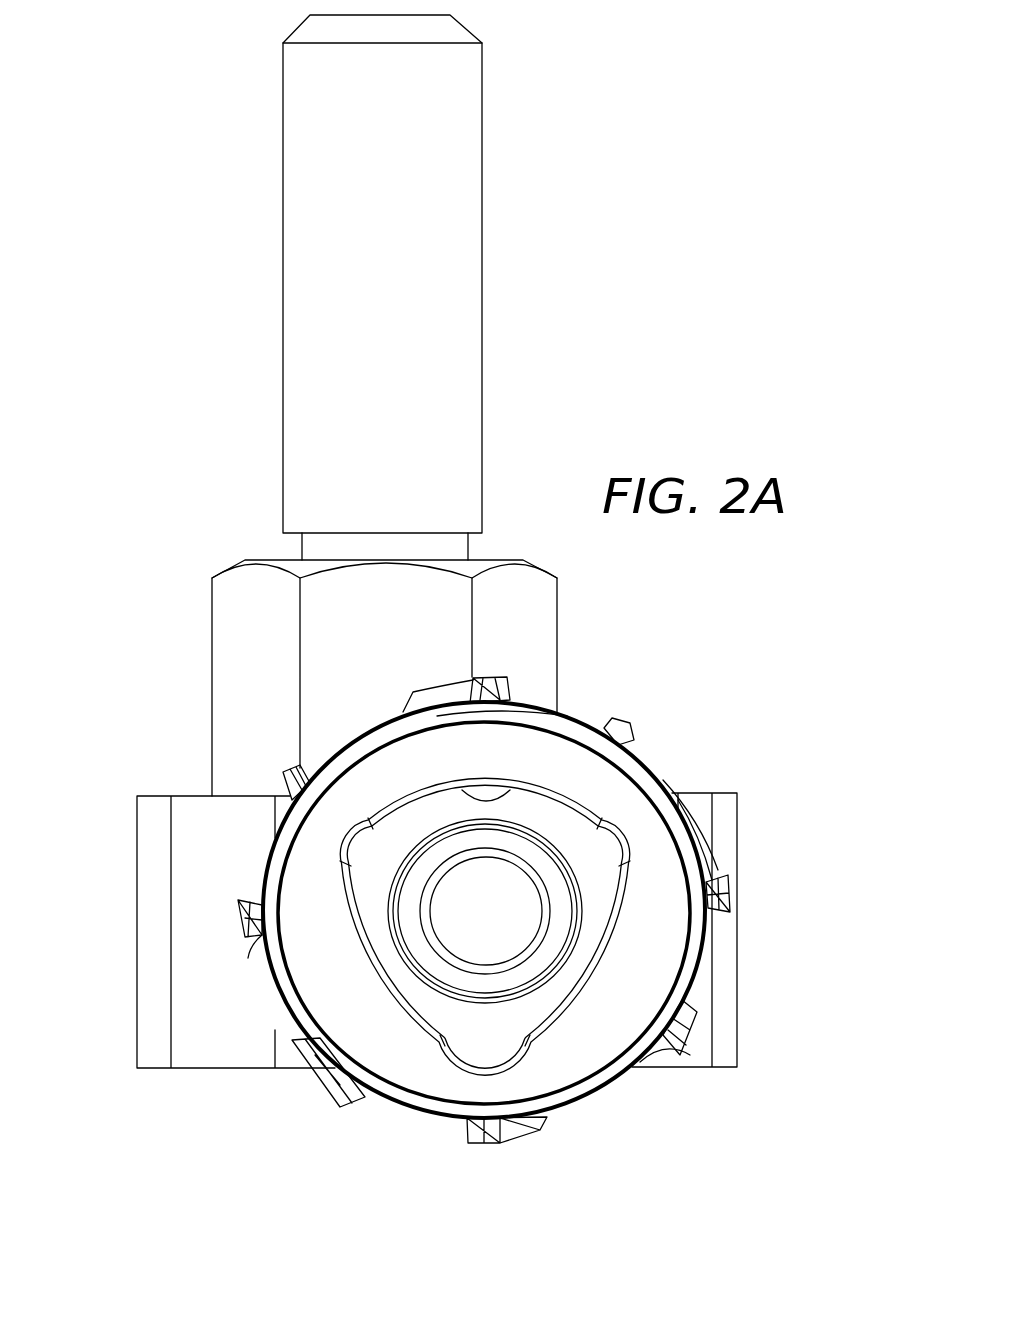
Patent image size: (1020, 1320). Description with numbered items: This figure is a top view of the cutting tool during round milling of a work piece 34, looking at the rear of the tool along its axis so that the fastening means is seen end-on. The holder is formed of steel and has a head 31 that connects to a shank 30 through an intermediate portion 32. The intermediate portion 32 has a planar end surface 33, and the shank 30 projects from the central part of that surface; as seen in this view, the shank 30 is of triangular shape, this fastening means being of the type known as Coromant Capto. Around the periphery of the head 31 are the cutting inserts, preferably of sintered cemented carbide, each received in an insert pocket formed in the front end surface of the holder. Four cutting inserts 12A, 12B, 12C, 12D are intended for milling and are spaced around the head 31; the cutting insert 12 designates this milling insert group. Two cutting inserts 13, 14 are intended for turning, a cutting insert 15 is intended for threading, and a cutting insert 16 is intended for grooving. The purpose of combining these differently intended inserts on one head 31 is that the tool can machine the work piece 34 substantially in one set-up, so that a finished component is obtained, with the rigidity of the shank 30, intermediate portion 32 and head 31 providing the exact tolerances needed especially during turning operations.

The cutting insert 12 is at (698, 738).
The cutting insert 12A is at (506, 684).
The cutting insert 12B is at (238, 905).
The cutting insert 12C is at (468, 1140).
The cutting insert 12D is at (712, 906).
The cutting insert 13 is at (292, 780).
The cutting insert 14 is at (357, 1097).
The cutting insert 15 is at (672, 1050).
The cutting insert 16 is at (622, 730).
The shank 30 is at (438, 1037).
The head 31 is at (698, 963).
The intermediate portion 32 is at (592, 1080).
The planar end surface 33 is at (338, 1015).
The work piece 34 is at (522, 355).